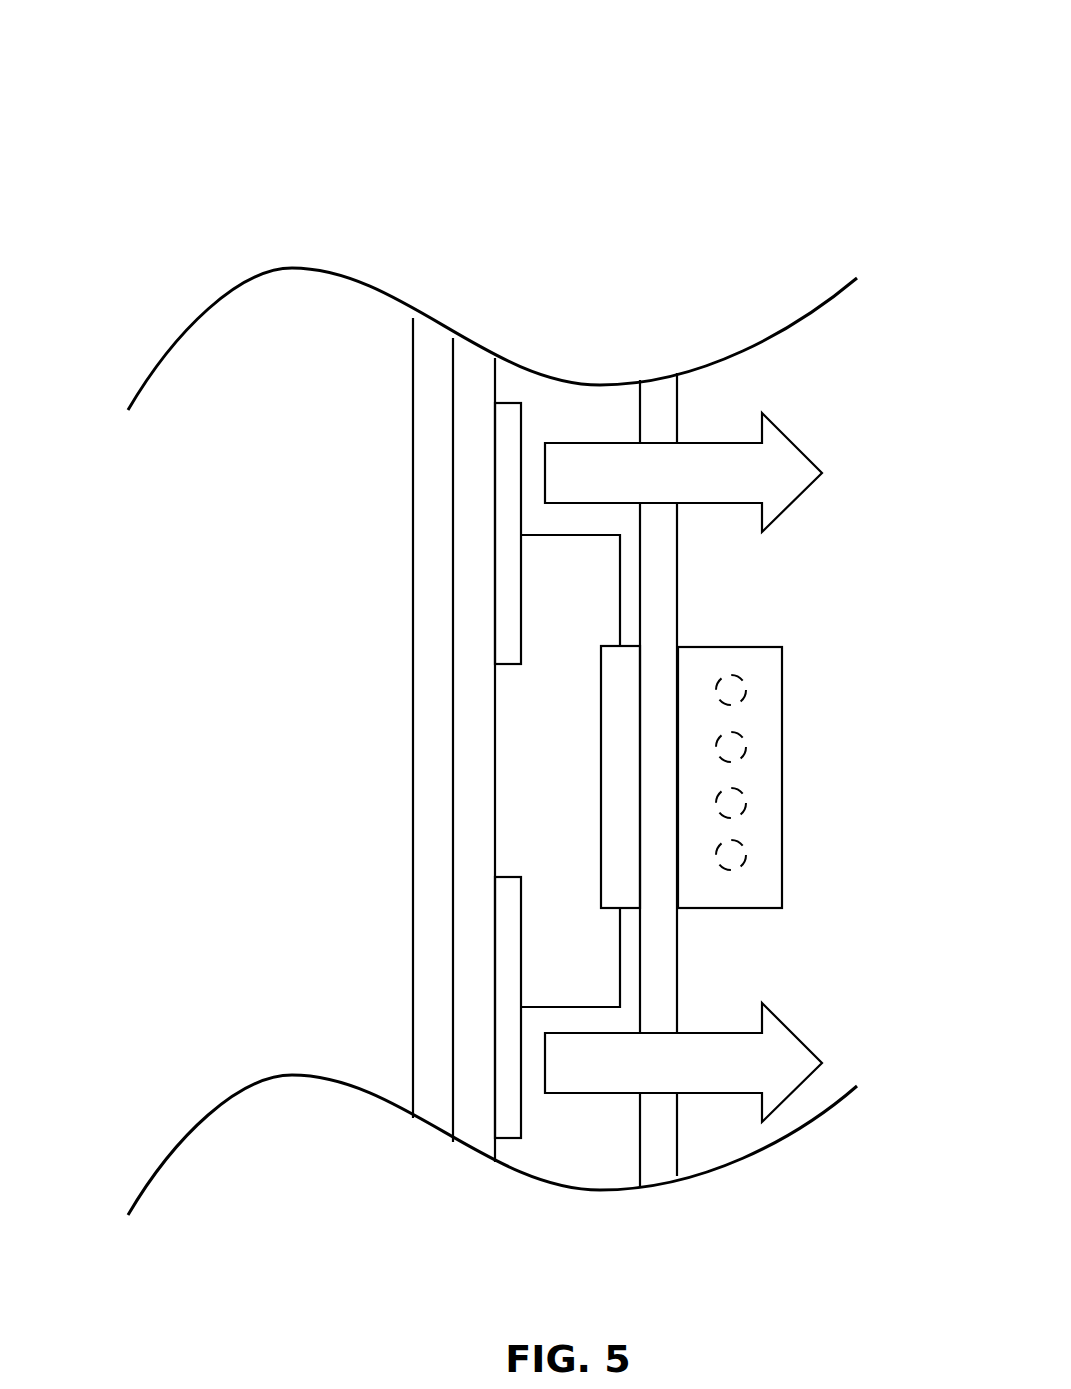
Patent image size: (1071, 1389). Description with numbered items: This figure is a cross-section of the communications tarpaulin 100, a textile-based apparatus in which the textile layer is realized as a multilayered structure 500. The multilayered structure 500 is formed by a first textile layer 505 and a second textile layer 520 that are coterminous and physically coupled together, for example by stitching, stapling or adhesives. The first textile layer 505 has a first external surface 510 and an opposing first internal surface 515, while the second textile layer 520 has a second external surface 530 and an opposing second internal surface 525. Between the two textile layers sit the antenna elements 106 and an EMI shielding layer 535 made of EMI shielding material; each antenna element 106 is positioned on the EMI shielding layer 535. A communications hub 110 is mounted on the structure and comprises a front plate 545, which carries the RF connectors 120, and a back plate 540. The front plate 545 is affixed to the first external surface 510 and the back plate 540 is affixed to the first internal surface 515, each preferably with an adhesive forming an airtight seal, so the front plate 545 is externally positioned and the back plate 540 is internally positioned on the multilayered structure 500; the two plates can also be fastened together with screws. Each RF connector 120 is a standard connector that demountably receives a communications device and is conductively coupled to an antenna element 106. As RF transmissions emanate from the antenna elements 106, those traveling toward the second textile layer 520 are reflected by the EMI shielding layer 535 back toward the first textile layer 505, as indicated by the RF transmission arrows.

The communications tarpaulin 100 is at (94, 93).
The antenna elements 106 is at (522, 598).
The communications hub 110 is at (875, 637).
The RF connector 120 is at (746, 688).
The multilayered structure 500 is at (362, 262).
The first textile layer 505 is at (663, 373).
The first external surface 510 is at (686, 578).
The first internal surface 515 is at (633, 1166).
The second textile layer 520 is at (412, 448).
The second internal surface 525 is at (462, 837).
The second external surface 530 is at (406, 717).
The EMI shielding layer 535 is at (467, 1150).
The back plate 540 is at (600, 720).
The front plate 545 is at (782, 813).